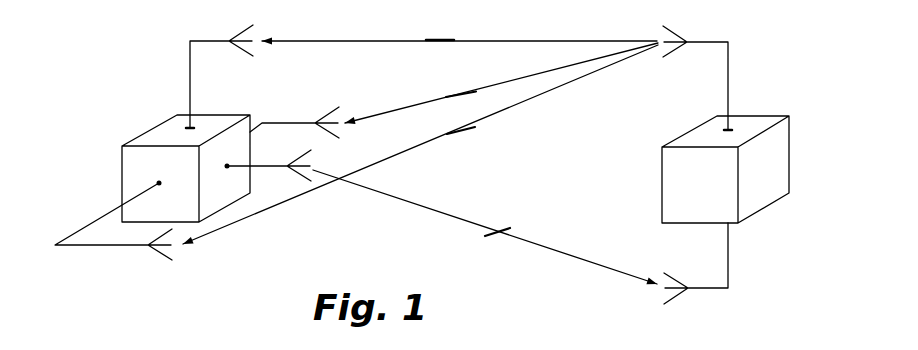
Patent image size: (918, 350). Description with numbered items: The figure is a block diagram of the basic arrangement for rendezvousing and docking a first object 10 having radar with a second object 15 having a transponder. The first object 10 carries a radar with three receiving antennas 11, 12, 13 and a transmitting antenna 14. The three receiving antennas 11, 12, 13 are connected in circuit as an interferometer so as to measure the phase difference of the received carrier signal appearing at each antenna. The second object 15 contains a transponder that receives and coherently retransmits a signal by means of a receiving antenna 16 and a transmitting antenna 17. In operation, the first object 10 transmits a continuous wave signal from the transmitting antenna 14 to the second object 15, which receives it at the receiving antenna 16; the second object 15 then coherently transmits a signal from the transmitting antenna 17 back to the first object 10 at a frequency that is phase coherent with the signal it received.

The first object 10 is at (143, 115).
The receiving antenna 11 is at (246, 26).
The receiving antenna 12 is at (336, 110).
The receiving antenna 13 is at (160, 252).
The transmitting antenna 14 is at (300, 157).
The second object 15 is at (770, 99).
The receiving antenna 16 is at (670, 279).
The transmitting antenna 17 is at (669, 31).